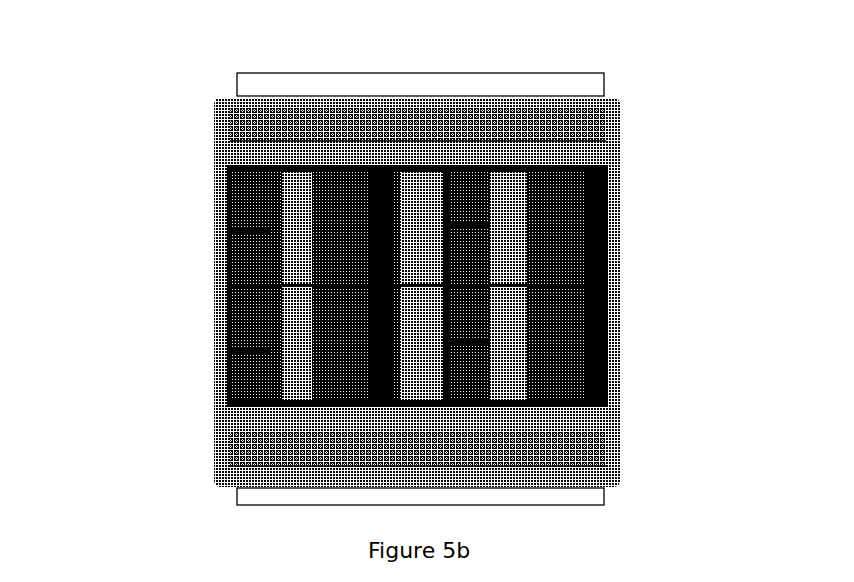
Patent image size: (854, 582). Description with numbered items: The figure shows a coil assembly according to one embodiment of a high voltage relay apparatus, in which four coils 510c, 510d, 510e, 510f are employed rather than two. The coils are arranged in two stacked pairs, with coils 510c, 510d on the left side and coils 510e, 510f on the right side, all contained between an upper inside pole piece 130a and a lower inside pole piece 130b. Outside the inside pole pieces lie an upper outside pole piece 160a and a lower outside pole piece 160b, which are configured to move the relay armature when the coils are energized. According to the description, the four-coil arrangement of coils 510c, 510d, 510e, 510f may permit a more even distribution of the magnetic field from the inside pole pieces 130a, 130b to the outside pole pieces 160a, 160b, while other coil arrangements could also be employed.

The outside pole piece 160a is at (457, 85).
The inside pole piece 130a is at (383, 121).
The inside pole piece 130b is at (275, 455).
The outside pole piece 160b is at (385, 492).
The coil 510c is at (310, 263).
The coil 510d is at (310, 373).
The coil 510e is at (531, 254).
The coil 510f is at (531, 362).